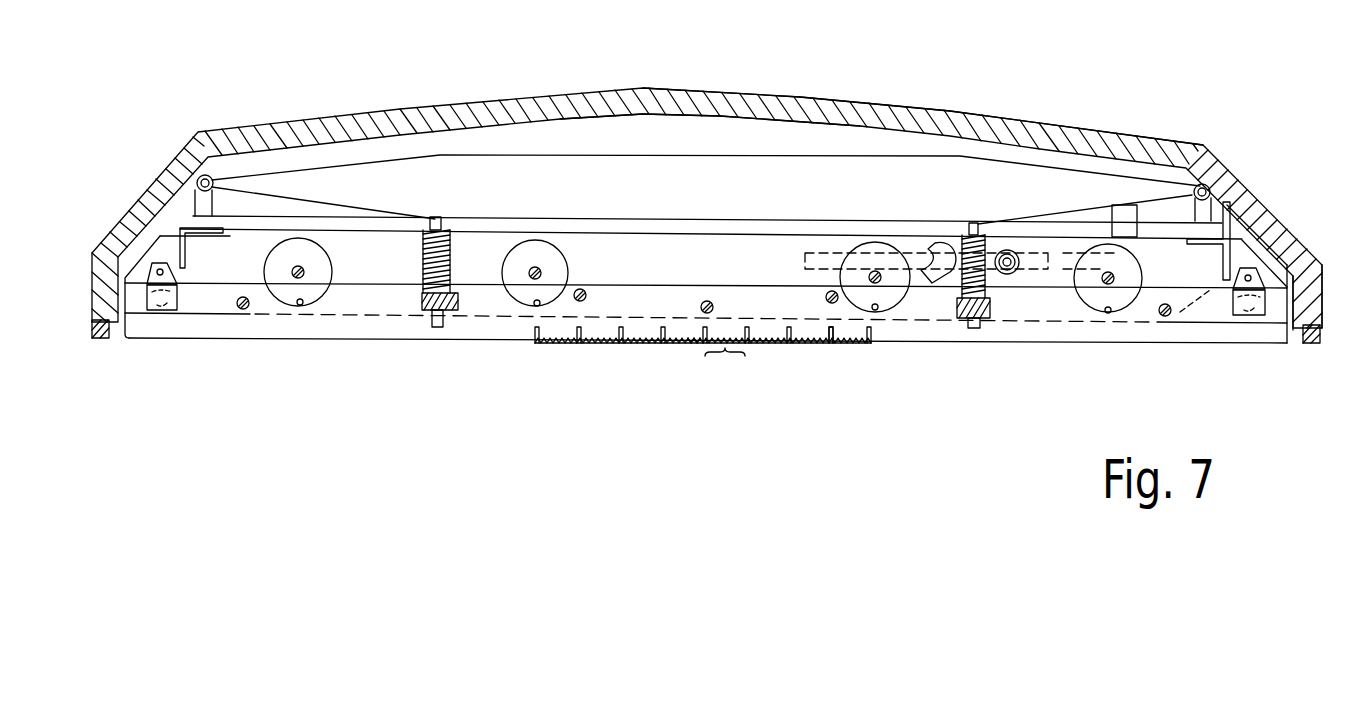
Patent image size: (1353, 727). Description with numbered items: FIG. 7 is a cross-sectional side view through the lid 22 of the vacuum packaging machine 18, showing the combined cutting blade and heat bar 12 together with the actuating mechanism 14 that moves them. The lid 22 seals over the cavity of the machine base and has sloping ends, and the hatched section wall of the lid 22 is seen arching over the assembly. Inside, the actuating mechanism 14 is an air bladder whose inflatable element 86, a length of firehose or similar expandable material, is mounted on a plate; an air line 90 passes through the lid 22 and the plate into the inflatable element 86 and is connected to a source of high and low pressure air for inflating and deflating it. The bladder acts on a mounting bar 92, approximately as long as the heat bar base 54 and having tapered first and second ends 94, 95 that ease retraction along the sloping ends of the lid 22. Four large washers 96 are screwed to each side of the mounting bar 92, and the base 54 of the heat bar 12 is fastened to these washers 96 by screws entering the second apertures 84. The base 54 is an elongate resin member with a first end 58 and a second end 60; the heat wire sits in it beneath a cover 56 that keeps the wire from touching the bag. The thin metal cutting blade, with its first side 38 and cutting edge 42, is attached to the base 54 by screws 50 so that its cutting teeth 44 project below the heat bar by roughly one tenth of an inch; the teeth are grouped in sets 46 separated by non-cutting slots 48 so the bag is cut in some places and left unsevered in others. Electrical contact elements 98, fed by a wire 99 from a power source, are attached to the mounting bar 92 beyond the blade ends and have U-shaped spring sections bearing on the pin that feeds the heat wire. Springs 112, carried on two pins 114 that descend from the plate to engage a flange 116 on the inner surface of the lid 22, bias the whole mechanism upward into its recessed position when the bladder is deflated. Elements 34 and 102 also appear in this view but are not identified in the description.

The heat bar 12 is at (153, 335).
The actuating mechanism 14 is at (725, 154).
The vacuum packaging machine 18 is at (1165, 133).
The lid 22 is at (1033, 122).
The fastener 34 is at (1312, 345).
The first side 38 is at (1185, 343).
The cutting edge 42 is at (897, 350).
The cutting teeth 44 is at (810, 348).
The sets of cutting teeth 46 is at (725, 366).
The non-cutting slot 48 is at (695, 333).
The screws 50 is at (250, 313).
The base 54 is at (1273, 312).
The cover 56 is at (1250, 338).
The first end 58 is at (1292, 286).
The second end 60 is at (123, 292).
The second apertures 84 is at (540, 303).
The inflatable element 86 is at (627, 173).
The air line 90 is at (1018, 215).
The mounting bar 92 is at (1148, 250).
The first end 94 is at (1275, 250).
The second end 95 is at (158, 225).
The large washers 96 is at (535, 246).
The electrical contact elements 98 is at (1233, 283).
The wire 99 is at (940, 248).
The right hanger bracket 102 is at (1222, 230).
The springs 112 is at (448, 242).
The pins 114 is at (425, 345).
The flange 116 is at (480, 345).